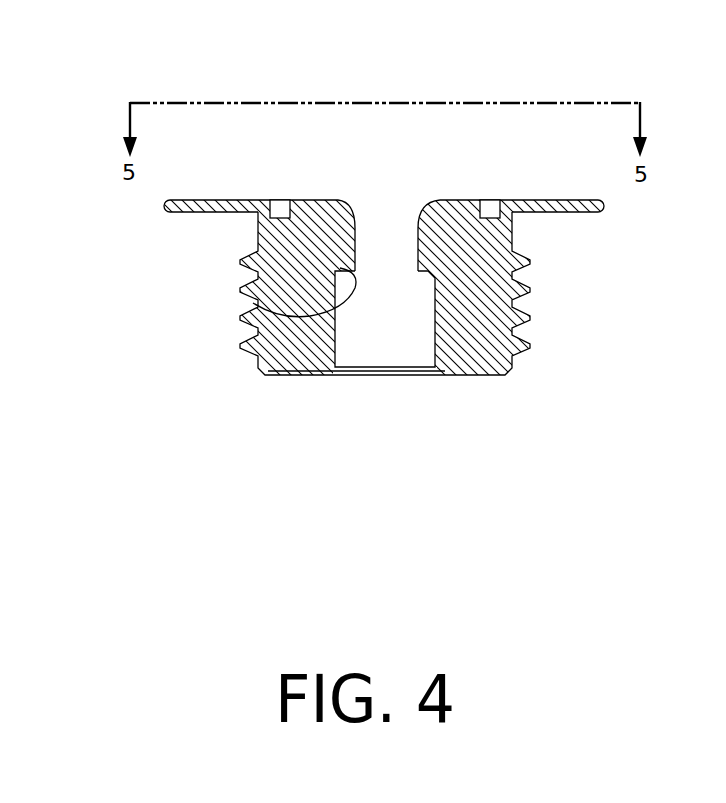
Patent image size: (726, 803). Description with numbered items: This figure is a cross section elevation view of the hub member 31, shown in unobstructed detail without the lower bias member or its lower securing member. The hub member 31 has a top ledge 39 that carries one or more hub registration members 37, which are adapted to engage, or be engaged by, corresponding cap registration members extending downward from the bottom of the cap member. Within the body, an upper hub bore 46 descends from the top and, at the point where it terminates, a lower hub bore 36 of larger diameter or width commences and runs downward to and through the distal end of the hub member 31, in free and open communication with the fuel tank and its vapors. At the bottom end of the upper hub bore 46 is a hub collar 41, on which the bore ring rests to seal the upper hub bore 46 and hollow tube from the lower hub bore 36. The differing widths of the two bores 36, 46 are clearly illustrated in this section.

The hub member 31 is at (540, 320).
The lower hub bore 36 is at (404, 337).
The hub registration member 37 is at (276, 200).
The top ledge 39 is at (226, 200).
The hub collar 41 is at (253, 303).
The upper hub bore 46 is at (400, 252).